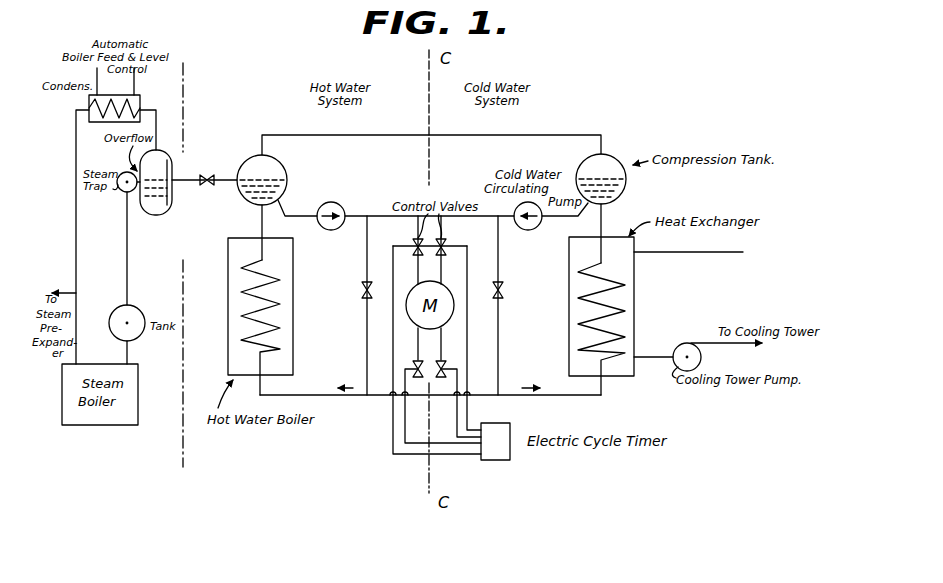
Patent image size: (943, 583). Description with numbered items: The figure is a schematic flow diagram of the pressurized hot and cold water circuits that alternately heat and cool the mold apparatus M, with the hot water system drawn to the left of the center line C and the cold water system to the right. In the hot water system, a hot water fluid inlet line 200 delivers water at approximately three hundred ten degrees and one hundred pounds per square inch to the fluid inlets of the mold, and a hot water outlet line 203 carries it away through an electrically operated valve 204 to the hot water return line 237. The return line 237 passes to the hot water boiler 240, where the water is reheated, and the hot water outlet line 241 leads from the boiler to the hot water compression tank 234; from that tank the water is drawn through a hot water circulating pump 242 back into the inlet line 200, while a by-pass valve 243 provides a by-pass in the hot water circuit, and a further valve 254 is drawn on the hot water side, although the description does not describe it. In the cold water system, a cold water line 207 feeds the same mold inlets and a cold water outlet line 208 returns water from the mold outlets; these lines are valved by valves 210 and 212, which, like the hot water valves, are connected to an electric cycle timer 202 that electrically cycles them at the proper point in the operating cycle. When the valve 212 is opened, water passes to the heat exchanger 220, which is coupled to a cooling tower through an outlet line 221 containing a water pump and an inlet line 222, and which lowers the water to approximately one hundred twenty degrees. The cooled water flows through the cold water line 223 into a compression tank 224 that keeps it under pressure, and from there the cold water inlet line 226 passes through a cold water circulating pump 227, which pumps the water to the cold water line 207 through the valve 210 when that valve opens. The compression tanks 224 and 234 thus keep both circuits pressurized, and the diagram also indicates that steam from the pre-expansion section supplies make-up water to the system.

The hot water fluid inlet line 200 is at (413, 229).
The electrical cycle timer 202 is at (500, 452).
The hot water outlet line 203 is at (418, 349).
The electrically operated valve 204 is at (405, 369).
The cold water line 207 is at (496, 213).
The cold water outlet line 208 is at (477, 394).
The cold water inlet valve 210 is at (444, 242).
The cold water outlet valve 212 is at (442, 362).
The heat exchanger 220 is at (628, 247).
The outlet line 221 is at (657, 355).
The inlet line 222 is at (702, 253).
The cold water line 223 is at (603, 226).
The compression tank 224 is at (626, 181).
The cold water inlet line 226 is at (543, 222).
The cold water circulating pump 227 is at (524, 231).
The hot water compression tank 234 is at (246, 156).
The hot water return line 237 is at (315, 393).
The hot water boiler 240 is at (228, 359).
The hot water outlet line 241 is at (262, 224).
The hot water circulating pump 242 is at (336, 203).
The by-pass valve 243 is at (503, 293).
The hot water valve 254 is at (363, 288).